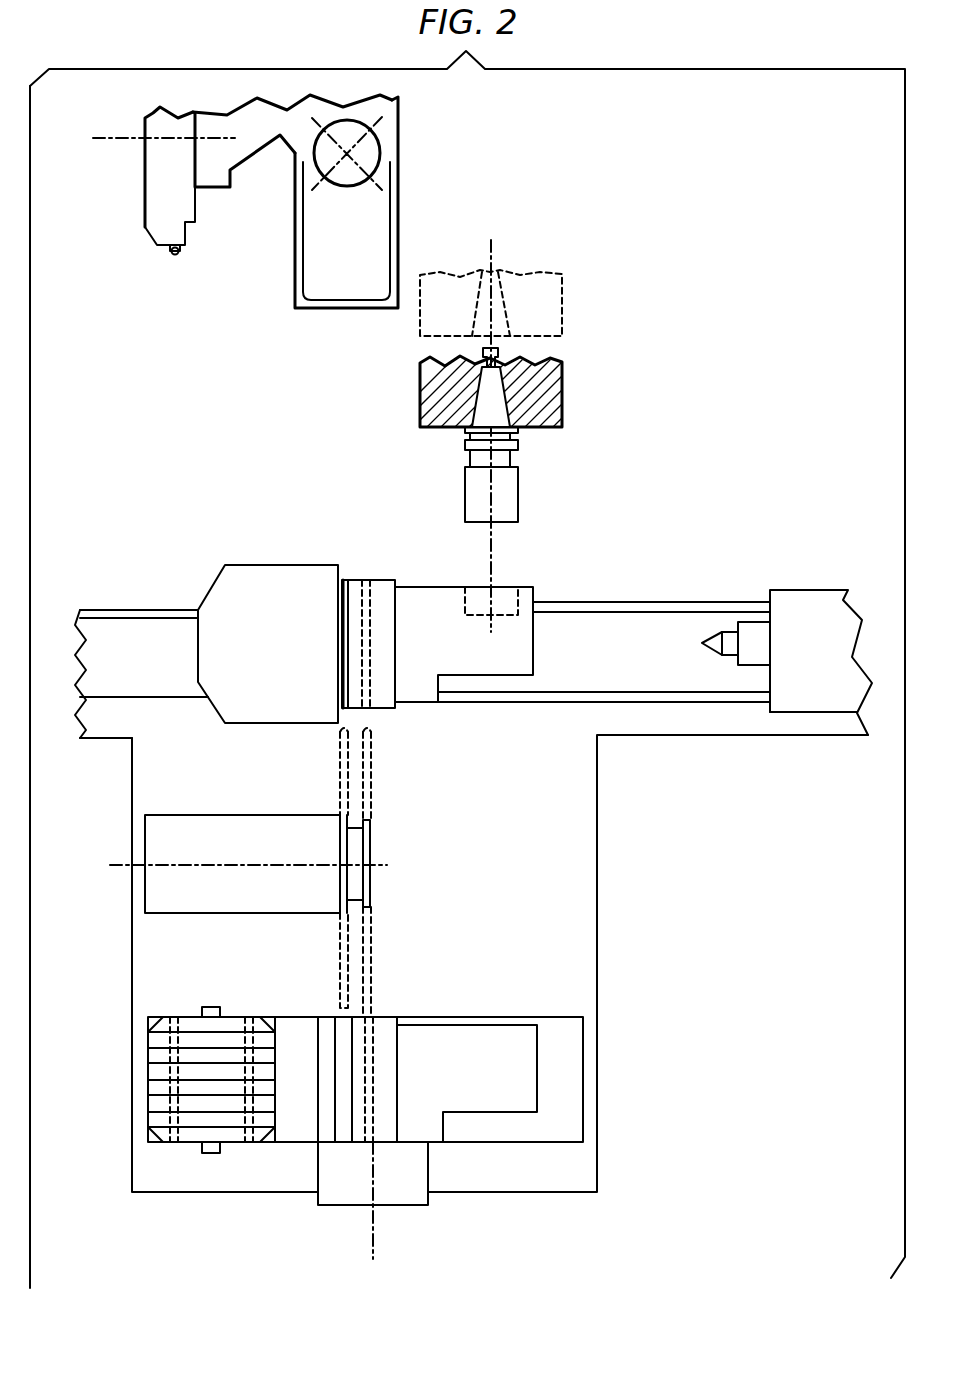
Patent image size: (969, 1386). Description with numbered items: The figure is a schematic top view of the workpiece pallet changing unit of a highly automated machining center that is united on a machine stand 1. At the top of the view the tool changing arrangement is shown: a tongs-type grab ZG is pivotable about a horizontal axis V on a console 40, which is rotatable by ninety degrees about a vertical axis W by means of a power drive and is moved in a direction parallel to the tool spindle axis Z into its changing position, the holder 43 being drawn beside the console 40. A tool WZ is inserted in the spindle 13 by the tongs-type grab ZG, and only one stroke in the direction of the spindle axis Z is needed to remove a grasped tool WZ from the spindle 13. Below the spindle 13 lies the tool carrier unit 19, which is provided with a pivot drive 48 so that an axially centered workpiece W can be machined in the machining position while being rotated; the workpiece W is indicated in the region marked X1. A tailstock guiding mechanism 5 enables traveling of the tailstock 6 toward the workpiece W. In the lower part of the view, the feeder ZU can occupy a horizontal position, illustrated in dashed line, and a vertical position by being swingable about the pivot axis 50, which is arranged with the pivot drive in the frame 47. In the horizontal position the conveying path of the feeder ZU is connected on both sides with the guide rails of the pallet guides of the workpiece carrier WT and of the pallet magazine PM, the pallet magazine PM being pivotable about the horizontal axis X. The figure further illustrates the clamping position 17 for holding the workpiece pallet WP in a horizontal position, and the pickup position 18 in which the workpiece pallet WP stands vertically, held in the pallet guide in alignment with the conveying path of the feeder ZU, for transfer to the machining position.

The machine stand 1 is at (133, 936).
The tailstock guiding mechanism 5 is at (642, 602).
The tailstock 6 is at (808, 590).
The spindle 13 is at (556, 402).
The clamping position 17 is at (193, 1150).
The pickup position 18 is at (386, 1017).
The tool carrier unit 19 is at (212, 592).
The console 40 is at (292, 173).
The tool magazine holder 43 is at (396, 237).
The frame 47 is at (210, 840).
The pivot drive 48 is at (343, 578).
The pivot axis 50 is at (120, 867).
The horizontal axis V is at (151, 138).
The tongs-type grab ZG is at (153, 205).
The vertical axis W is at (347, 154).
The tool spindle axis Z is at (491, 257).
The tool WZ is at (497, 500).
The workpiece carrier WT is at (352, 575).
The X1 axis X1 is at (491, 540).
The workpiece pallet WP is at (357, 693).
The feeder ZU is at (370, 850).
The pallet magazine PM is at (295, 1142).
The horizontal axis X is at (373, 1230).